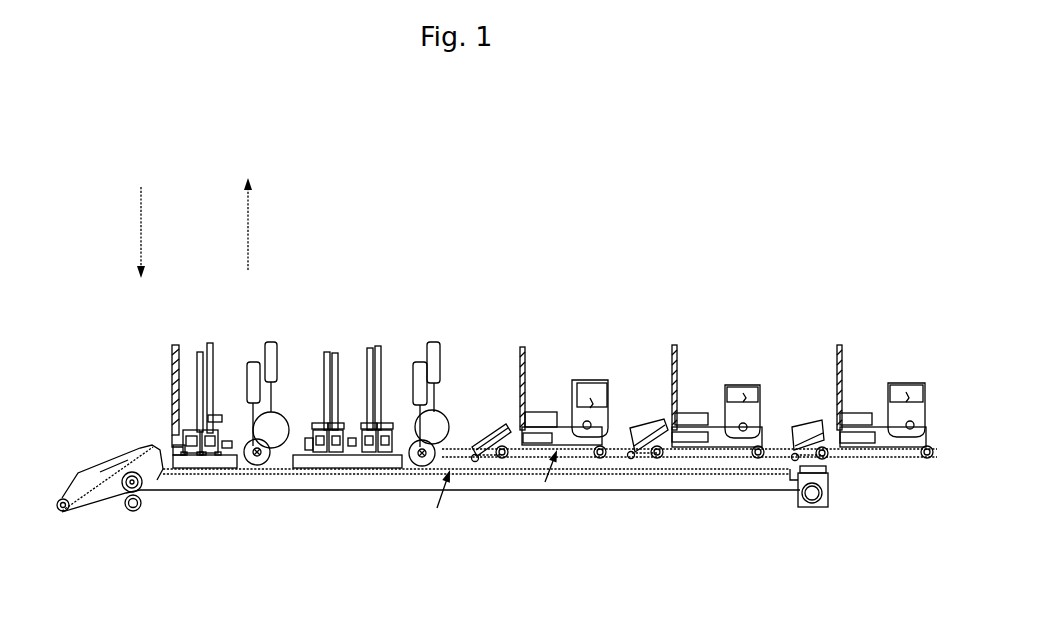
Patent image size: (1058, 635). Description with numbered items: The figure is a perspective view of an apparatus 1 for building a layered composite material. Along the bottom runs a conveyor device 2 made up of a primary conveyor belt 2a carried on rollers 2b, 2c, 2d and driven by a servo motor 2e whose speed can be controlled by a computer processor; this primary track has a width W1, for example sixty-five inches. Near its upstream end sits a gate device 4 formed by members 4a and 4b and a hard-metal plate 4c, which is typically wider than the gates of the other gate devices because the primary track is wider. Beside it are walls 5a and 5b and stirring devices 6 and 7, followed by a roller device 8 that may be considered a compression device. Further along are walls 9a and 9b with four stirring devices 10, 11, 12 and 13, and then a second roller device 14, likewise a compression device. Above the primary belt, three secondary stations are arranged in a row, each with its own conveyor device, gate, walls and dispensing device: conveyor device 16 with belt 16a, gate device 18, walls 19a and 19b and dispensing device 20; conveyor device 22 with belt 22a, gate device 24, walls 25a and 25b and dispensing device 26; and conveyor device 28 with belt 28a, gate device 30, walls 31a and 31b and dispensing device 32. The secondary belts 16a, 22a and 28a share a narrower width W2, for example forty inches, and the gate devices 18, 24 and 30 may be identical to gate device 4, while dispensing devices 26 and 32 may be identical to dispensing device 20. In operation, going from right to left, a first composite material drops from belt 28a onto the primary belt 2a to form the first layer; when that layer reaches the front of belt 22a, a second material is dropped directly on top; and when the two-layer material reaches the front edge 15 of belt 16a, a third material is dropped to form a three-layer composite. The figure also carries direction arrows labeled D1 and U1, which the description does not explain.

The apparatus 1 is at (505, 262).
The conveyor device 2 is at (112, 463).
The conveyor belt 2a is at (125, 465).
The roller 2b is at (67, 508).
The roller 2c is at (140, 492).
The roller 2d is at (137, 510).
The servo motor 2e is at (810, 500).
The gate device 4 is at (167, 395).
The member 4a is at (172, 413).
The member 4b is at (172, 380).
The plate 4c is at (179, 449).
The wall 5a is at (212, 467).
The wall 5b is at (232, 440).
The stirring device 6 is at (197, 387).
The stirring device 7 is at (207, 370).
The roller device 8 is at (260, 353).
The wall 9a is at (352, 466).
The wall 9b is at (352, 438).
The stirring device 10 is at (325, 383).
The stirring device 11 is at (333, 345).
The stirring device 12 is at (368, 353).
The stirring device 13 is at (377, 345).
The roller device 14 is at (420, 357).
The front edge 15 is at (460, 432).
The conveyor device 16 is at (495, 423).
The belt 16a is at (585, 445).
The gate device 18 is at (513, 357).
The wall 19a is at (538, 443).
The wall 19b is at (532, 412).
The dispensing device 20 is at (587, 380).
The conveyor device 22 is at (647, 432).
The belt 22a is at (717, 440).
The gate device 24 is at (672, 380).
The wall 25a is at (693, 443).
The wall 25b is at (687, 417).
The dispensing device 26 is at (738, 390).
The conveyor device 28 is at (810, 432).
The belt 28a is at (888, 440).
The gate device 30 is at (838, 378).
The wall 31a is at (865, 443).
The wall 31b is at (857, 412).
The dispensing device 32 is at (903, 390).
The width of track 2a W1 is at (457, 460).
The width of tracks 16a, 22a, and 28a W2 is at (563, 437).
The downward direction D1 is at (126, 232).
The upward direction U1 is at (235, 224).